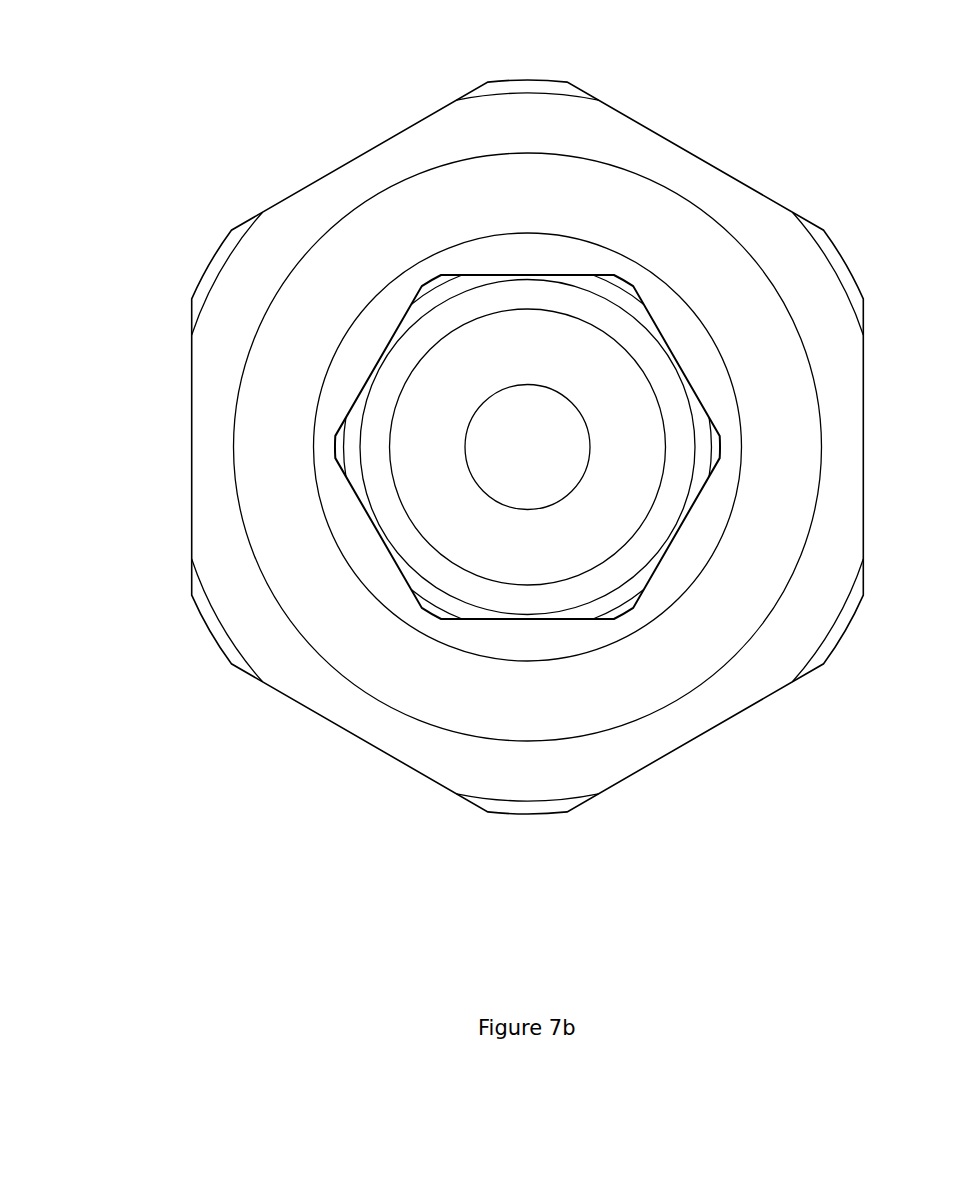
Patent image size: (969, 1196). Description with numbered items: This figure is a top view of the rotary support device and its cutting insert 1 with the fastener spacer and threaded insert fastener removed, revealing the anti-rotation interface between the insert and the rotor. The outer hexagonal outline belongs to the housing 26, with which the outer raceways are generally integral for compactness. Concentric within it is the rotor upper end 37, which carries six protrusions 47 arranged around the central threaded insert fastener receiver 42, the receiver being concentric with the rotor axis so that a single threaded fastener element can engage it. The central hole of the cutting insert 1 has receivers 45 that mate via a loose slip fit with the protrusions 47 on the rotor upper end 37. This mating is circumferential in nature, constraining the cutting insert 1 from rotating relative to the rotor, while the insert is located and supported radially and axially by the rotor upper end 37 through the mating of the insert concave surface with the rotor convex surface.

The cutting insert 1 is at (293, 594).
The housing 26 is at (357, 748).
The rotor upper end 37 is at (218, 553).
The threaded insert fastener receiver 42 is at (500, 417).
The receivers 45 is at (355, 397).
The protrusions 47 is at (330, 447).